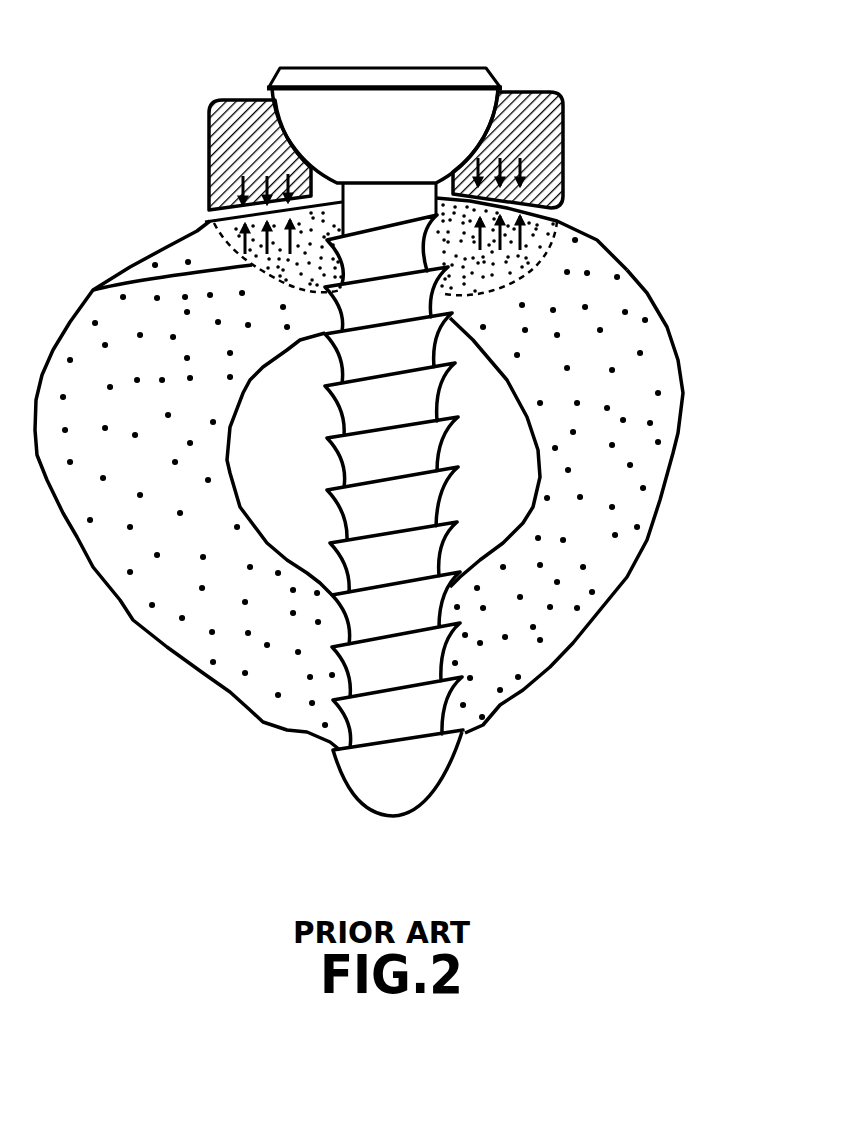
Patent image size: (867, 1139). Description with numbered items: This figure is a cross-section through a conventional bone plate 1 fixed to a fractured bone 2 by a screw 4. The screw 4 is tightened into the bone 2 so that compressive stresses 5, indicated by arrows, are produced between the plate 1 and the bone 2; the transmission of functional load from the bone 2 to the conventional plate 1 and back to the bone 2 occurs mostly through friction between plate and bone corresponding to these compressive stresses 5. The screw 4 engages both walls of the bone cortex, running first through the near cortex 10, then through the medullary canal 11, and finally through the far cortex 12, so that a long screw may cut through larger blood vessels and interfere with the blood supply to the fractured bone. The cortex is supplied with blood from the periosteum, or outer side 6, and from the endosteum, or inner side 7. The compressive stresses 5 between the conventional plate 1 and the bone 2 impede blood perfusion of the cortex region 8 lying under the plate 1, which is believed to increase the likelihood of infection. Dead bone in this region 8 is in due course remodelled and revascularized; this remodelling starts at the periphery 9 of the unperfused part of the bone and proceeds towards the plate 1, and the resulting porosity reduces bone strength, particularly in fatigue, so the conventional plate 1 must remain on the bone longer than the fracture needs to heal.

The bone plate 1 is at (553, 147).
The bone 2 is at (660, 373).
The screw 4 is at (420, 101).
The compressive stresses 5 is at (245, 237).
The periosteum (outer side) 6 is at (675, 451).
The endosteum (inner side) 7 is at (537, 477).
The cortex region under the plate 8 is at (530, 253).
The periphery of the unperfused part of the bone 9 is at (93, 290).
The near cortex 10 is at (538, 292).
The medullary canal 11 is at (495, 525).
The far cortex 12 is at (493, 655).